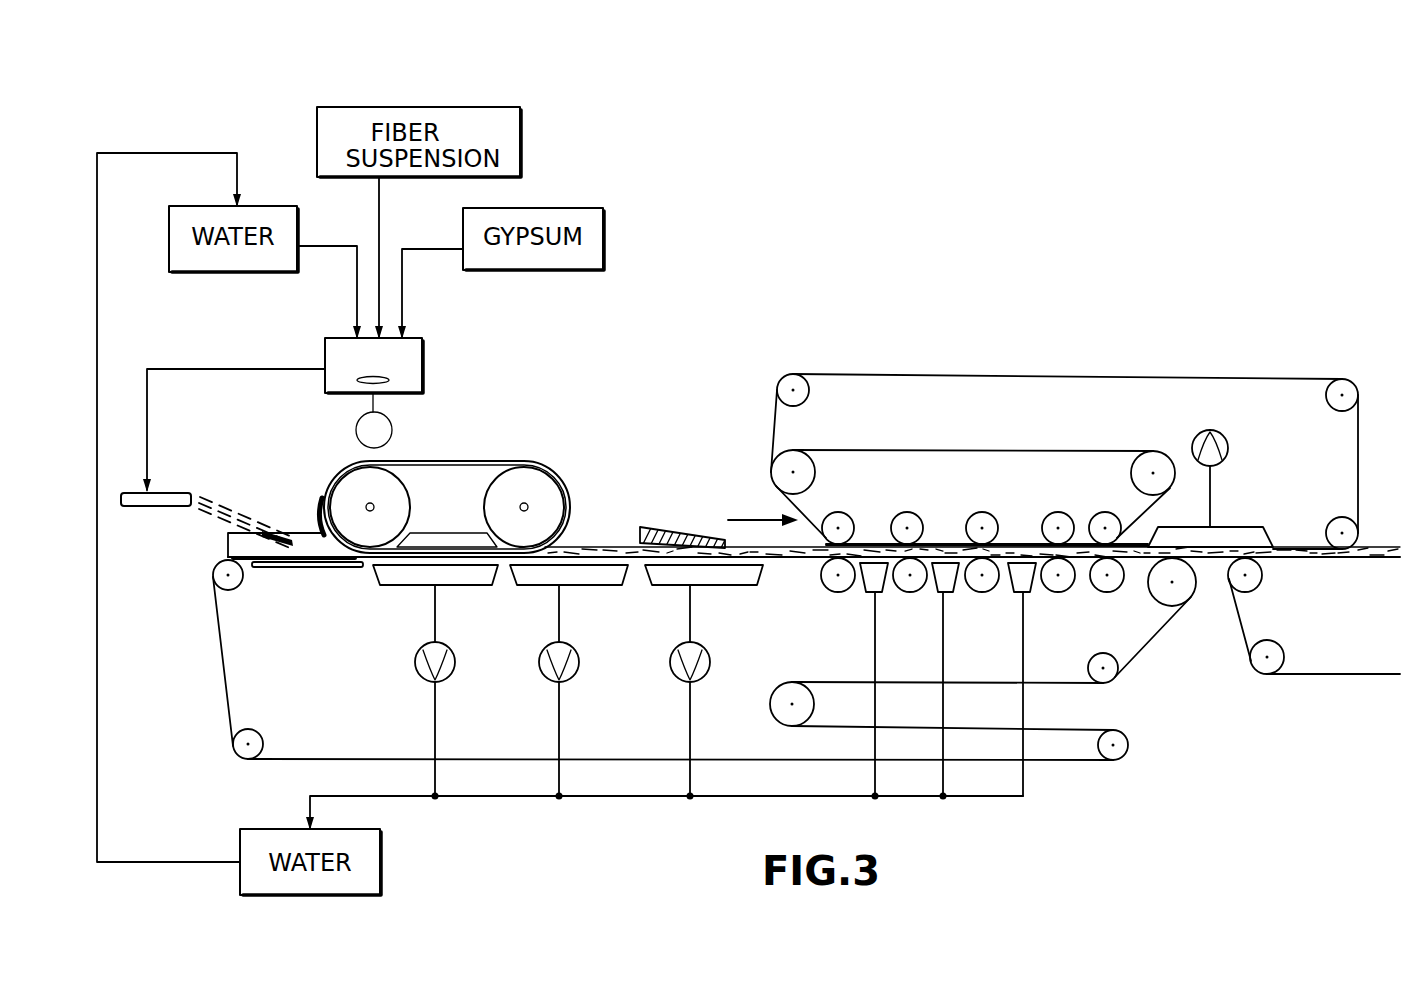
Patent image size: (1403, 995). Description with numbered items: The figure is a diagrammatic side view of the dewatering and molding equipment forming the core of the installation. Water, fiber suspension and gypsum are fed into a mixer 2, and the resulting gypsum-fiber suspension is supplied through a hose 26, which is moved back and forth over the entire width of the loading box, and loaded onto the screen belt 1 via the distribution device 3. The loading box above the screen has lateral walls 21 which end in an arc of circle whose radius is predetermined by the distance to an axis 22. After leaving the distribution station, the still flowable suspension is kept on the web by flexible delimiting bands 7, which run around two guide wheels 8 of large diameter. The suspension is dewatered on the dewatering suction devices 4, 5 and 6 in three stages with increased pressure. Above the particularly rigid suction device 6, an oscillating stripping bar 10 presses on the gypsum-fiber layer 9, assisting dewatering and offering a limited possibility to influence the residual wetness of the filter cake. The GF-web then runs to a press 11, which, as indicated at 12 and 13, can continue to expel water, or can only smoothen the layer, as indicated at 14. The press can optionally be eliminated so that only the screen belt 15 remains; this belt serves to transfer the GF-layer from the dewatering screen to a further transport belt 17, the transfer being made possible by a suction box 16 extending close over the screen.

The screen belt 1 is at (222, 686).
The mixer 2 is at (412, 376).
The distribution device 3 is at (171, 493).
The dewatering suction device 4 is at (403, 577).
The dewatering suction device 5 is at (535, 577).
The dewatering suction device 6 is at (668, 577).
The flexible delimiting bands 7 is at (441, 470).
The guide wheels 8 is at (533, 487).
The gypsum-fiber layer 9 is at (588, 547).
The oscillating stripping bar 10 is at (658, 527).
The press 11 is at (865, 450).
The press rollers 12 is at (975, 525).
The suction boxes 13 is at (941, 583).
The smoothing rollers 14 is at (1100, 522).
The screen belt 15 is at (1053, 375).
The suction box 16 is at (1262, 527).
The transport belt 17 is at (1248, 620).
The lateral walls 21 is at (293, 570).
The axis 22 is at (365, 505).
The hose 26 is at (229, 510).